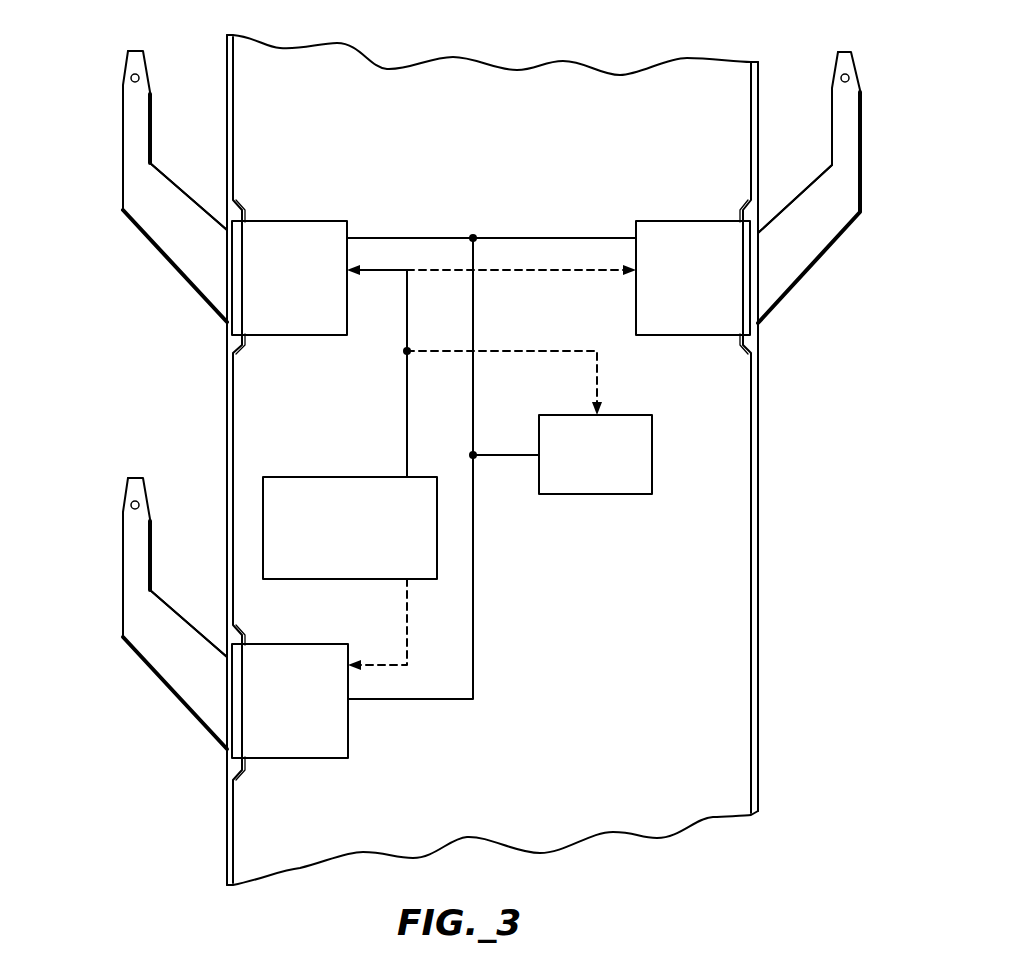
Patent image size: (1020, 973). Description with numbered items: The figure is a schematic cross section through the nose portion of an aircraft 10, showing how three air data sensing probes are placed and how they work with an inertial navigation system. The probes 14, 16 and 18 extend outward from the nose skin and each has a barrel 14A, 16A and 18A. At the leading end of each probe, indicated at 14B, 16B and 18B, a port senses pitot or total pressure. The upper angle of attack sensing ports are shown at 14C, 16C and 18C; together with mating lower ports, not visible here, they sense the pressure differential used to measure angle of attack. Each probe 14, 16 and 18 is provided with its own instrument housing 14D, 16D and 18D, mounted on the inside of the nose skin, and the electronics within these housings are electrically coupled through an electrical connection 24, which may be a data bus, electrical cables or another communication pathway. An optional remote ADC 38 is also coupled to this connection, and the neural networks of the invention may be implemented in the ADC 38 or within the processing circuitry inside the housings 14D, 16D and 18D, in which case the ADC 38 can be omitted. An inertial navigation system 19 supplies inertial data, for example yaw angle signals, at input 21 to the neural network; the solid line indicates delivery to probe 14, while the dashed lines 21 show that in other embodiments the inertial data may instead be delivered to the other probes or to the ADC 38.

The aircraft 10 is at (766, 567).
The probe 14 is at (145, 171).
The barrel 14A is at (153, 147).
The leading end 14B is at (137, 51).
The top angle of attack sensing port 14C is at (147, 78).
The instrument housing 14D is at (273, 232).
The probe 16 is at (832, 168).
The barrel 16A is at (832, 147).
The leading end 16B is at (845, 52).
The top angle of attack sensing port 16C is at (838, 78).
The instrument housing 16D is at (708, 232).
The probe 18 is at (145, 597).
The barrel 18A is at (153, 574).
The leading end 18B is at (137, 478).
The top angle of attack sensing port 18C is at (147, 504).
The instrument housing 18D is at (275, 658).
The inertial navigation system 19 is at (350, 477).
The input 21 is at (407, 410).
The electrical connection 24 is at (476, 645).
The remote ADC 38 is at (617, 415).